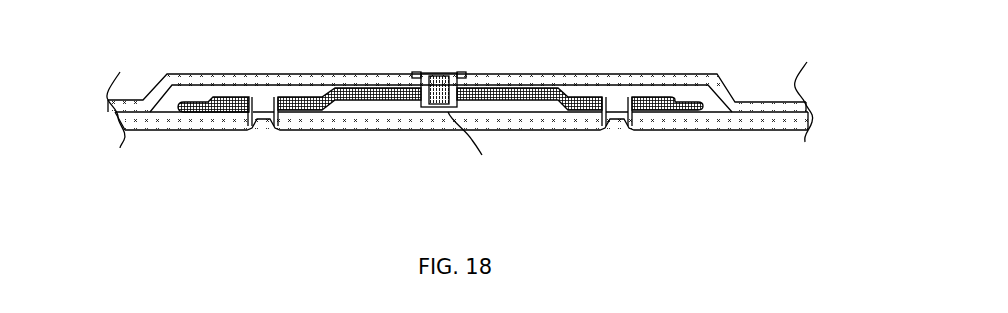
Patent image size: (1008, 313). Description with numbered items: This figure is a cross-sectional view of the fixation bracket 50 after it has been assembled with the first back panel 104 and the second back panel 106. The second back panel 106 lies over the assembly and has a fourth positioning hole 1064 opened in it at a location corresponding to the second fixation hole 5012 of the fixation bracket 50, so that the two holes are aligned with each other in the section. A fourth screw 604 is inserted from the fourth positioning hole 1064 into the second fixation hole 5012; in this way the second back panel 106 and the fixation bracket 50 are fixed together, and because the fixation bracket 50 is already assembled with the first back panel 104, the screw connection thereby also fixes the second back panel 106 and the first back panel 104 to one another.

The second back panel 106 is at (288, 74).
The fourth positioning hole 1064 is at (437, 73).
The first back panel 104 is at (320, 117).
The fourth screw 604 is at (430, 112).
The second fixation hole 5012 is at (484, 147).
The fixation bracket 50 is at (507, 97).